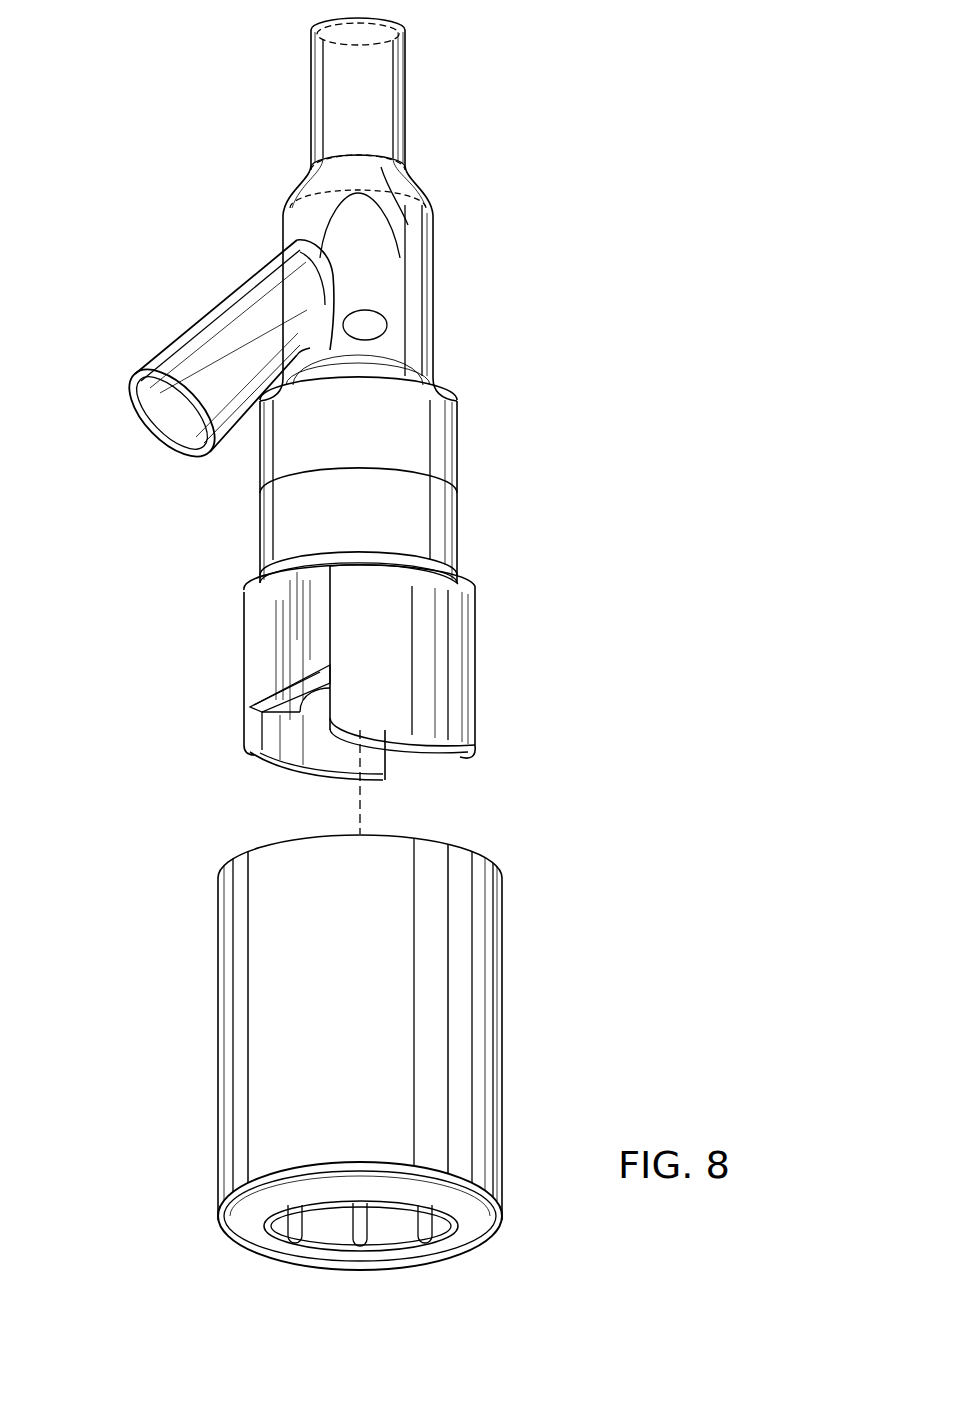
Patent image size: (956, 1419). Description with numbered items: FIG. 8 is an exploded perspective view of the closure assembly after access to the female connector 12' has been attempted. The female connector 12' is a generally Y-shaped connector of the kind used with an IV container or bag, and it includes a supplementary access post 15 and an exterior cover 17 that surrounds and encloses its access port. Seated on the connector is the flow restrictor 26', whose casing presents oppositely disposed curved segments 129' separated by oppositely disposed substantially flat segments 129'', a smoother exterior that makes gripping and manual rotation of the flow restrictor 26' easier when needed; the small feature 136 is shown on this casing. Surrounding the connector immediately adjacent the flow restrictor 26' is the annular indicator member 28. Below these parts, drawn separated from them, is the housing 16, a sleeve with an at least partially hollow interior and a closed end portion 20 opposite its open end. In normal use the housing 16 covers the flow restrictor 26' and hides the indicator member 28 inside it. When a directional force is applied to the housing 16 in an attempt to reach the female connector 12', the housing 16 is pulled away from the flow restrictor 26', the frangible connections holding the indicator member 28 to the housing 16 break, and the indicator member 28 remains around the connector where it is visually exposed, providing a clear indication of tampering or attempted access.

The female connector 12' is at (465, 209).
The supplementary access post 15 is at (237, 295).
The exterior cover 17 is at (450, 477).
The indicator member 28 is at (457, 537).
The flow restrictor 26' is at (383, 699).
The curved segments 129' is at (494, 662).
The flat segments 129'' is at (232, 676).
The key tab 136 is at (293, 718).
The housing 16 is at (436, 1066).
The closed end portion 20 is at (477, 1215).